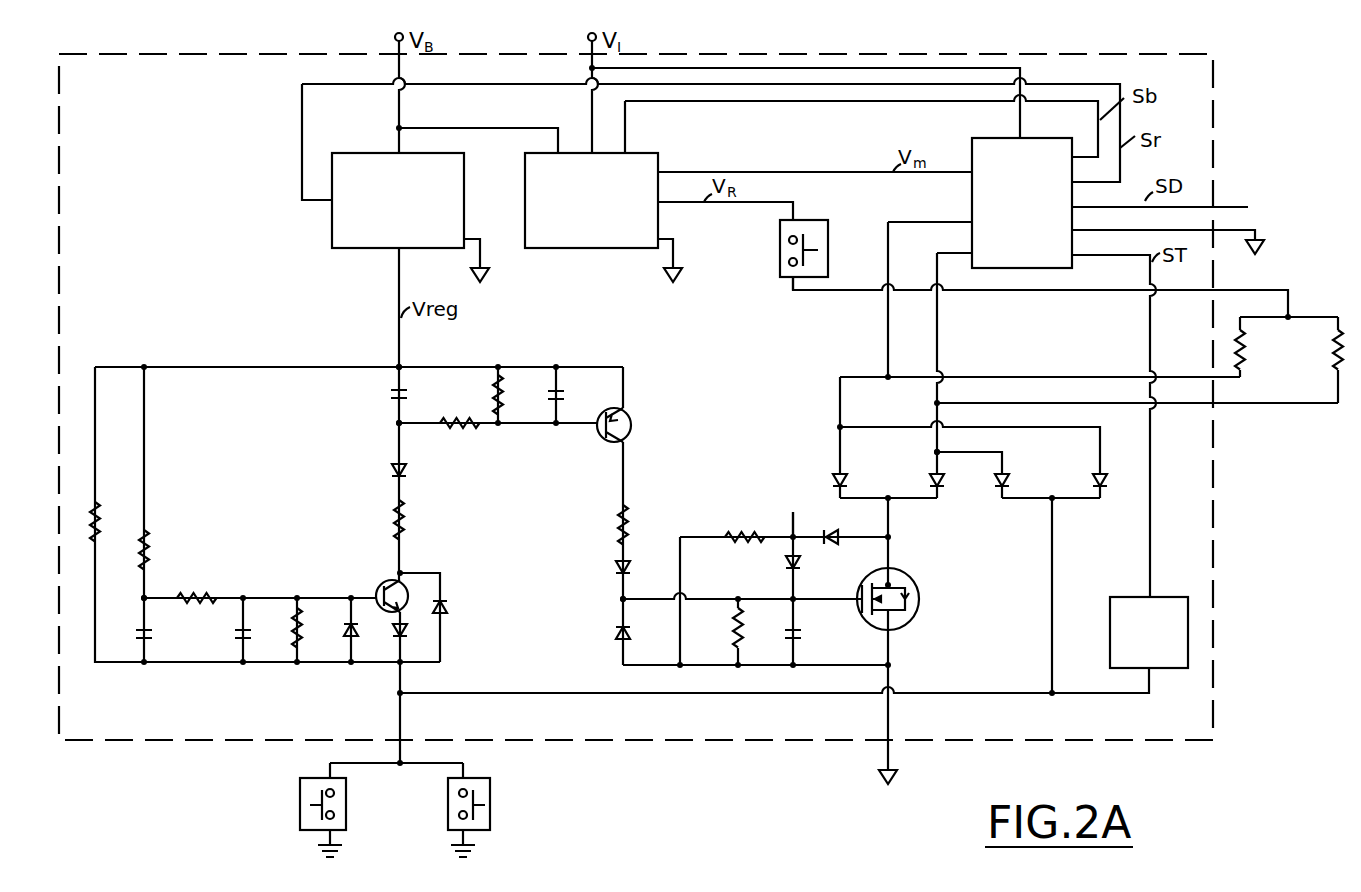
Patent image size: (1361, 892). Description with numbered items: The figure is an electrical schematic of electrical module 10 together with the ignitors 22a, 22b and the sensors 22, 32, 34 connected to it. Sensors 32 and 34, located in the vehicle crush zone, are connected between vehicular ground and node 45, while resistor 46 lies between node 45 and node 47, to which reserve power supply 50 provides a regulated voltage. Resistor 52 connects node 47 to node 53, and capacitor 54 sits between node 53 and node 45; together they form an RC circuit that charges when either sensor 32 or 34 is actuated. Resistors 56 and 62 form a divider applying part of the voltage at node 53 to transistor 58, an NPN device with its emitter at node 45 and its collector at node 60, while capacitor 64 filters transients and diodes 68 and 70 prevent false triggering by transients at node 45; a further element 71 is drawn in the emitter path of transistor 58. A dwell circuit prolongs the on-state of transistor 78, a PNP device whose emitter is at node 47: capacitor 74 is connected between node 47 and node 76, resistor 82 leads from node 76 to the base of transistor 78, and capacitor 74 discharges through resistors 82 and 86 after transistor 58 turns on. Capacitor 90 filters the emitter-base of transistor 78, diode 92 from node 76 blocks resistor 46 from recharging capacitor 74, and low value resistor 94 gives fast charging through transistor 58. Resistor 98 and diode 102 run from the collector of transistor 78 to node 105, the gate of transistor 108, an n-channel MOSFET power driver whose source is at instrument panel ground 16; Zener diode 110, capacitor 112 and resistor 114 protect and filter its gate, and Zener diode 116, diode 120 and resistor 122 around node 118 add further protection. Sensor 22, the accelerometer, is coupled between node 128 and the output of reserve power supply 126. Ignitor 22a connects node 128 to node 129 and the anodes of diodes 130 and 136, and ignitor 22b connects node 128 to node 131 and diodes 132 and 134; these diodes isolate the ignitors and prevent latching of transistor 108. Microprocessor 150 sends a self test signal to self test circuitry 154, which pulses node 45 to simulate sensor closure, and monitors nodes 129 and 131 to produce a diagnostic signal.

The electrical module 10 is at (799, 746).
The instrument panel electrical ground 16 is at (490, 280).
The sensor 22 is at (780, 243).
The ignitor 22a is at (1238, 338).
The ignitor 22b is at (1341, 366).
The sensor 32 is at (490, 809).
The sensor 34 is at (300, 793).
The node 45 is at (397, 693).
The resistor 46 is at (124, 506).
The node 47 is at (397, 363).
The reserve power supply 50 is at (464, 223).
The resistor 52 is at (150, 538).
The node 53 is at (144, 598).
The capacitor 54 is at (151, 636).
The resistor 56 is at (192, 596).
The transistor 58 is at (382, 582).
The node 60 is at (402, 573).
The resistor 62 is at (293, 634).
The capacitor 64 is at (240, 635).
The diode 68 is at (347, 634).
The diode 70 is at (448, 606).
The zener diode 71 is at (410, 630).
The capacitor 74 is at (394, 392).
The node 76 is at (396, 423).
The transistor 78 is at (632, 419).
The resistor 82 is at (457, 430).
The resistor 86 is at (490, 395).
The capacitor 90 is at (550, 398).
The diode 92 is at (392, 469).
The resistor 94 is at (392, 518).
The resistor 98 is at (618, 525).
The diode 102 is at (614, 565).
The node 105 is at (622, 599).
The transistor 108 is at (911, 588).
The Zener diode 110 is at (614, 633).
The capacitor 112 is at (801, 635).
The resistor 114 is at (732, 626).
The Zener diode 116 is at (832, 531).
The node 118 is at (786, 511).
The diode 120 is at (786, 563).
The resistor 122 is at (738, 531).
The reserve power supply 126 is at (598, 250).
The node 128 is at (797, 289).
The node 129 is at (829, 425).
The diode 130 is at (834, 473).
The node 131 is at (930, 452).
The diode 132 is at (1005, 481).
The diode 134 is at (930, 478).
The diode 136 is at (1105, 476).
The microprocessor 150 is at (968, 136).
The self test circuitry 154 is at (1122, 597).